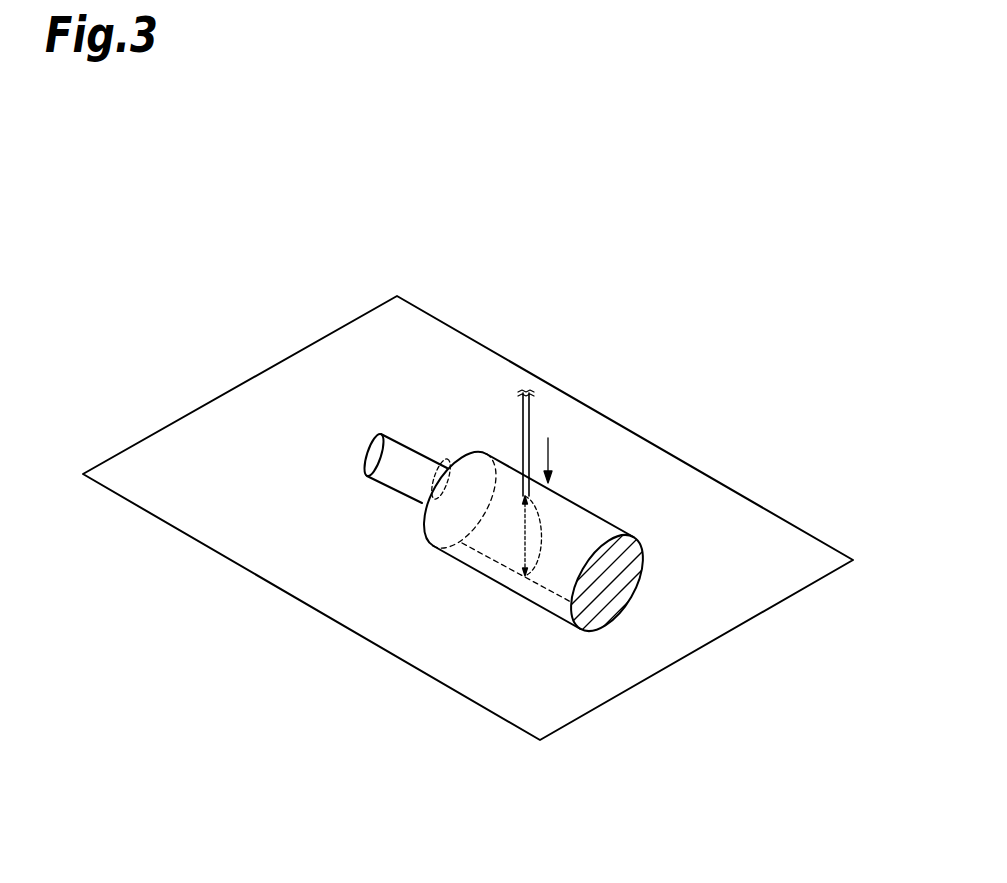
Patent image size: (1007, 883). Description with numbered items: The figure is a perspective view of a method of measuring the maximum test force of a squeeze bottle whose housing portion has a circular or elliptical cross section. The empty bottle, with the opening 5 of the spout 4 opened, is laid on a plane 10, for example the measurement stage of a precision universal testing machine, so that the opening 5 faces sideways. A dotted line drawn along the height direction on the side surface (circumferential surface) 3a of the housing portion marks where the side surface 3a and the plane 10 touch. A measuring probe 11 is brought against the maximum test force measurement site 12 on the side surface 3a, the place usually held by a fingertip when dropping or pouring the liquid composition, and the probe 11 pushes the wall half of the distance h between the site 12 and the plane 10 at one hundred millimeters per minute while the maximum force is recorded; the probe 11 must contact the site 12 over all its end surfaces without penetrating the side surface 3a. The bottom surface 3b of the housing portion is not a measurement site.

The side surface (circumferential surface) of the housing portion 3a is at (497, 550).
The bottom surface of the housing portion 3b is at (633, 597).
The spout 4 is at (398, 482).
The opening 5 is at (407, 477).
The plane 10 is at (730, 528).
The measuring probe 11 is at (533, 432).
The maximum test force measurement site 12 is at (553, 498).